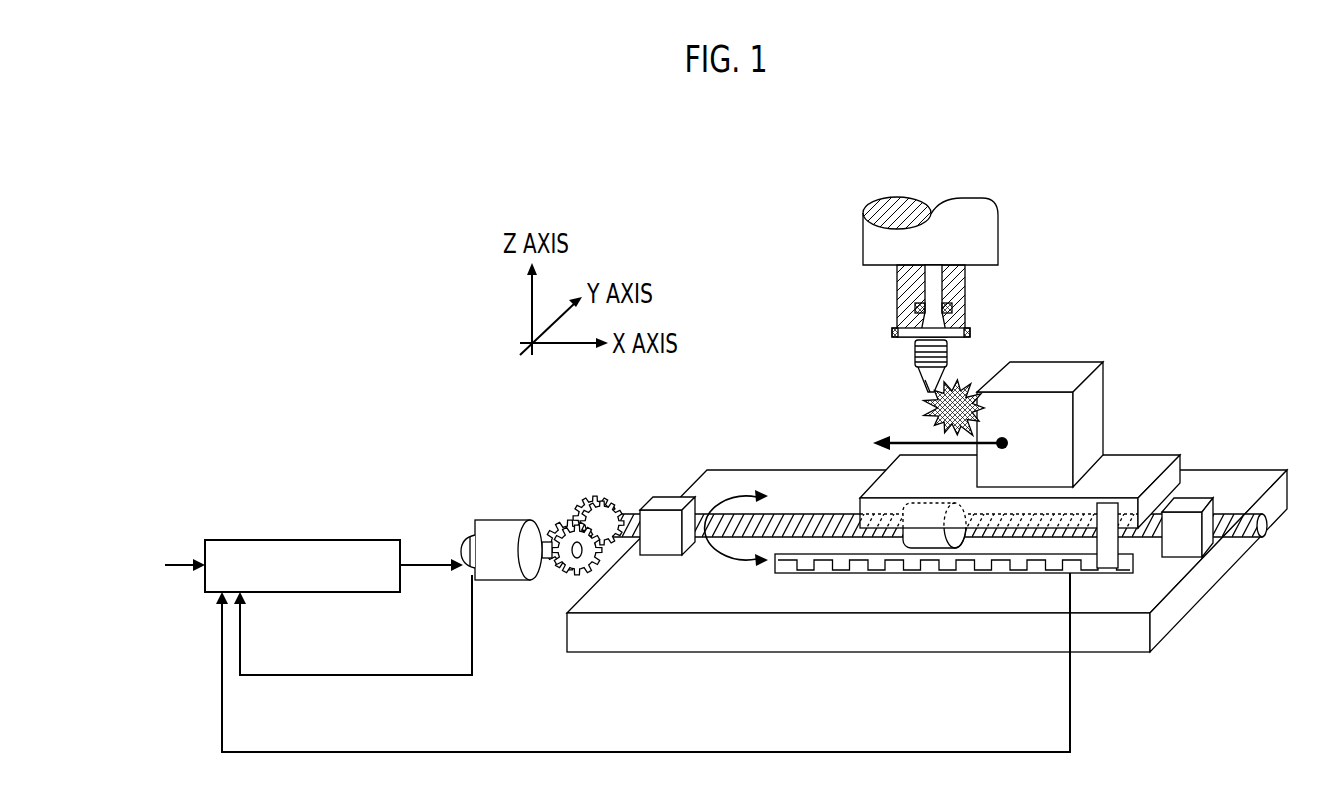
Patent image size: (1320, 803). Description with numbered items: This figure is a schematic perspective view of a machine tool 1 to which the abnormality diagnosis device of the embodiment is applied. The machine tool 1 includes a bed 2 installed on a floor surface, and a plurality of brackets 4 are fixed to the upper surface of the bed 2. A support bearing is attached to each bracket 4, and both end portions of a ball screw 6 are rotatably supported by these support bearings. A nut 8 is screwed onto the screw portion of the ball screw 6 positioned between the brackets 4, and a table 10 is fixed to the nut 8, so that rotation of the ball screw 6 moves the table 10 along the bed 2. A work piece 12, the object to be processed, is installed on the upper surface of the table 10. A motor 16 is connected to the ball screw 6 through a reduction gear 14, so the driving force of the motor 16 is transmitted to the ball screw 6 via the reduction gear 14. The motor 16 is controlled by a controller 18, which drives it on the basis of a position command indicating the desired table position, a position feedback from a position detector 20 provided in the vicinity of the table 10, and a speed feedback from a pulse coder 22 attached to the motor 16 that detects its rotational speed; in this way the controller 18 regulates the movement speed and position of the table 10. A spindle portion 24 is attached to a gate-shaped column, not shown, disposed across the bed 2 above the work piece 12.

The machine tool 1 is at (769, 415).
The bed 2 is at (651, 588).
The bracket 4 is at (668, 502).
The ball screw 6 is at (760, 530).
The nut 8 is at (930, 533).
The table 10 is at (1143, 463).
The work piece 12 is at (1093, 407).
The reduction gear 14 is at (560, 523).
The motor 16 is at (503, 530).
The controller 18 is at (233, 552).
The position detector 20 is at (1108, 560).
The pulse coder 22 is at (465, 540).
The spindle portion 24 is at (1010, 234).